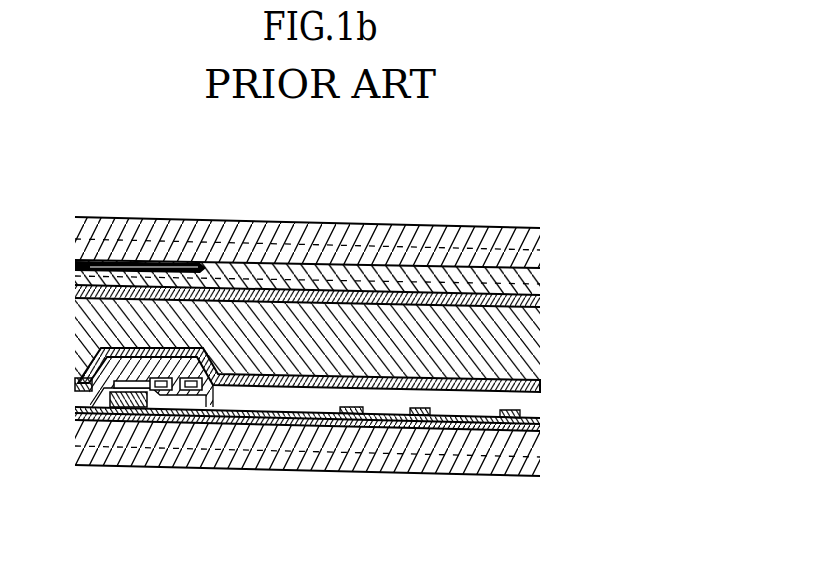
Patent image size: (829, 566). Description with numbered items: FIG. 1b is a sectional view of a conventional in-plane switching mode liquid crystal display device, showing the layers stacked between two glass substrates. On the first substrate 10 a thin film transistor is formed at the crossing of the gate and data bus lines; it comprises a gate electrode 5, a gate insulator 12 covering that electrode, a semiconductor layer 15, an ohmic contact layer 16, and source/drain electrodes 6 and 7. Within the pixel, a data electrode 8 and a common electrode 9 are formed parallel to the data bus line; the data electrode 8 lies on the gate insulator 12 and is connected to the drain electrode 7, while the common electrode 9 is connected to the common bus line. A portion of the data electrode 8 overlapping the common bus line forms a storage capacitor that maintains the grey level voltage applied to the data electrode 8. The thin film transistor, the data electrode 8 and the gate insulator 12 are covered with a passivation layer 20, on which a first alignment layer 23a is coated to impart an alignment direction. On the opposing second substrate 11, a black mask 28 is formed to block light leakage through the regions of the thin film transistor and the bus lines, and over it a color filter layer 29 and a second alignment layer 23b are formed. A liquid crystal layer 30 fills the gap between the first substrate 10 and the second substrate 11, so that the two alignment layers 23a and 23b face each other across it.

The gate electrode 5 is at (142, 425).
The source electrode 6 is at (83, 398).
The drain electrode 7 is at (206, 425).
The data electrode 8 is at (350, 421).
The common electrode 9 is at (273, 420).
The first substrate 10 is at (506, 468).
The second substrate 11 is at (517, 226).
The gate insulator 12 is at (536, 428).
The semiconductor layer 15 is at (100, 432).
The ohmic contact layer 16 is at (186, 425).
The passivation layer 20 is at (536, 417).
The first alignment layer 23a is at (532, 378).
The second alignment layer 23b is at (537, 310).
The black mask 28 is at (183, 265).
The color filter layer 29 is at (528, 286).
The liquid crystal layer 30 is at (93, 345).